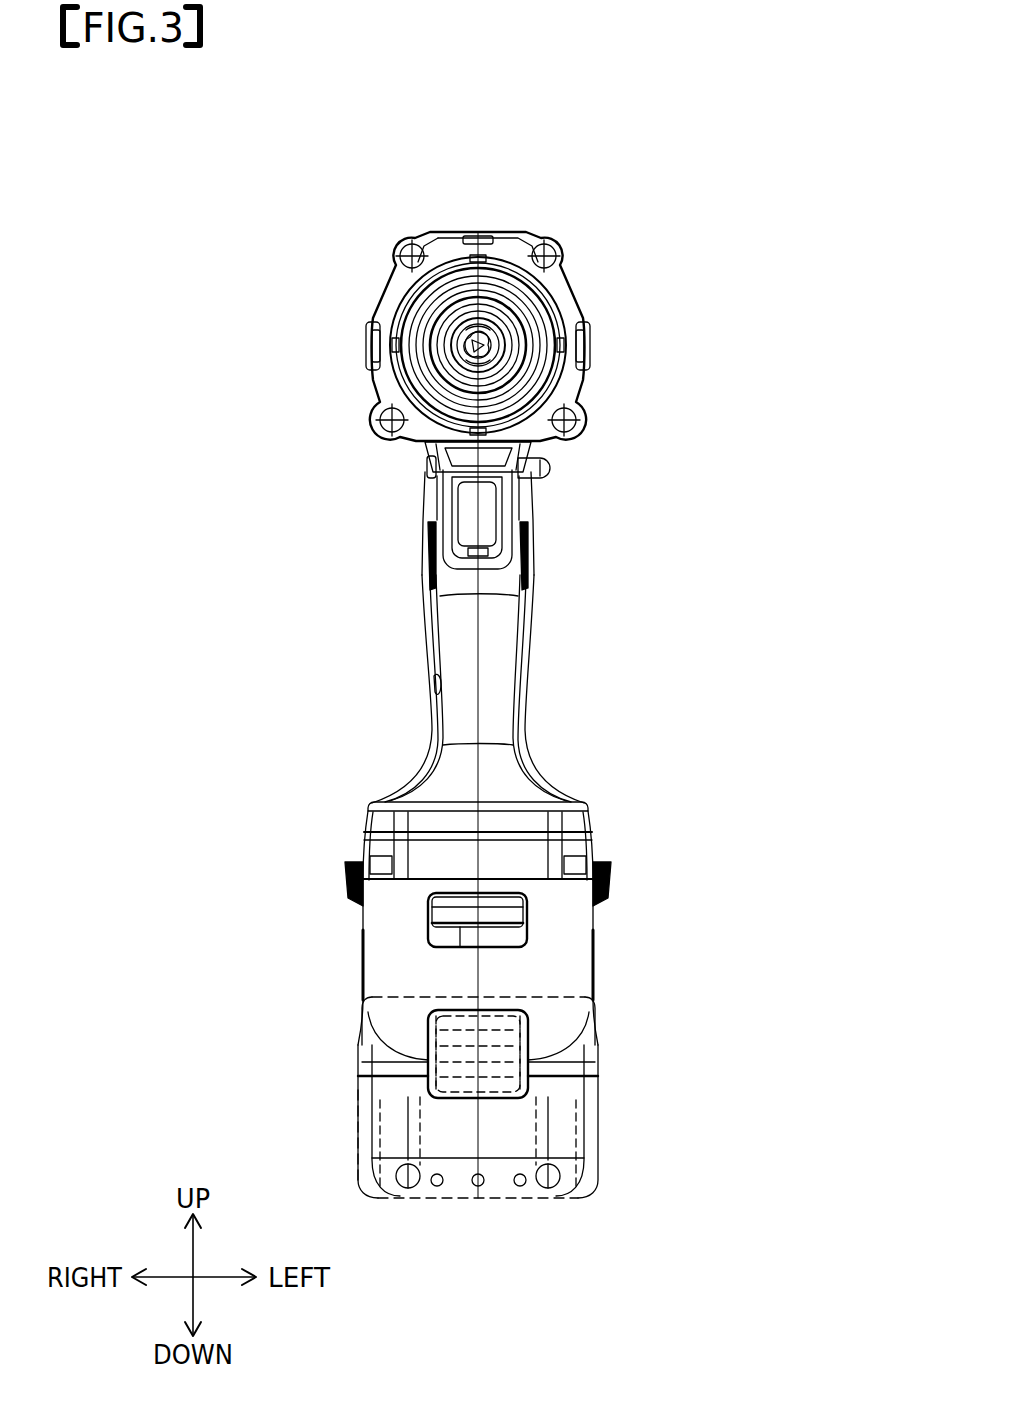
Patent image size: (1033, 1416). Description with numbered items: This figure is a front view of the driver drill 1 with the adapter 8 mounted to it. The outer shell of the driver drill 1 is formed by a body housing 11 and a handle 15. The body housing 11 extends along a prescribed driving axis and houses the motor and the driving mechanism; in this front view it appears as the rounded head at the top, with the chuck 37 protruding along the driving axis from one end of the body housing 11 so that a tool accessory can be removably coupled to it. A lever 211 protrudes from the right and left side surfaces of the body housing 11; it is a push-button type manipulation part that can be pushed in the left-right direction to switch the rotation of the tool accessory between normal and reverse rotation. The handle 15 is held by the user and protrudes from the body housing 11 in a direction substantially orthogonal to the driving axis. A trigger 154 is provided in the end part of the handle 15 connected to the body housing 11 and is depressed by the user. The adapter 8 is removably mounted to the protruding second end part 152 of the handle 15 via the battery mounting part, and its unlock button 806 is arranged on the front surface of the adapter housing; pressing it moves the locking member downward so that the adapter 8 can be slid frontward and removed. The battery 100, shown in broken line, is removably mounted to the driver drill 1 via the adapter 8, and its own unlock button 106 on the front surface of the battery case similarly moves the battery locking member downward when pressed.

The driver drill 1 is at (750, 143).
The body housing 11 is at (550, 222).
The chuck 37 is at (497, 316).
The lever 211 is at (549, 468).
The trigger 154 is at (470, 509).
The handle 15 is at (442, 645).
The second end part 152 is at (352, 842).
The adapter 8 is at (328, 935).
The unlock button 806 is at (478, 923).
The unlock button 106 is at (505, 1078).
The battery 100 is at (615, 1155).